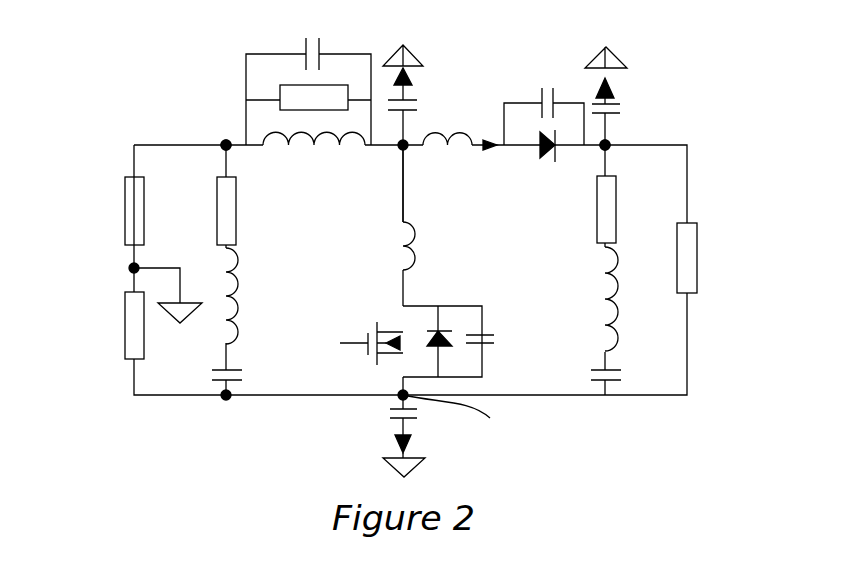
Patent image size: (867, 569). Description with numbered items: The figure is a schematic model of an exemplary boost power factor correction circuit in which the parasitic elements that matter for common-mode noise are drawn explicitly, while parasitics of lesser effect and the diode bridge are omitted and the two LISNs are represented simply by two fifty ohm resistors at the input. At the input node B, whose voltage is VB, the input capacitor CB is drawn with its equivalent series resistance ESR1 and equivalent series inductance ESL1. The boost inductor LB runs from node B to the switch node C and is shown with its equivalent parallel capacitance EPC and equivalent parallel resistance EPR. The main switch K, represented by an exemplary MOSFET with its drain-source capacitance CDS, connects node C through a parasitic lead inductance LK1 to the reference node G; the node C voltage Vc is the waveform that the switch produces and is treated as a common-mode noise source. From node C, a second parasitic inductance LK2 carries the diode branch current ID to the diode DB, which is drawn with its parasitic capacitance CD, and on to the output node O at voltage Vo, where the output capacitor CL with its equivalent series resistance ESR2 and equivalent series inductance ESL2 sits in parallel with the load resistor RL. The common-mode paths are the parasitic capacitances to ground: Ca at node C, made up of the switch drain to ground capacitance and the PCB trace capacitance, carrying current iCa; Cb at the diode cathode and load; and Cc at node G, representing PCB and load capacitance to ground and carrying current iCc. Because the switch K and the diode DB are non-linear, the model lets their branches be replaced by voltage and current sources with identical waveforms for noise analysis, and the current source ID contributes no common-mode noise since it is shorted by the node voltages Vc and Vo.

The equivalent parallel capacitance EPC is at (276, 91).
The equivalent parallel resistance EPR is at (276, 94).
The boost inductor LB is at (315, 167).
The node B voltage VB is at (213, 130).
The equivalent series resistance of input capacitor ESR1 is at (265, 211).
The equivalent series inductance of input capacitor ESL1 is at (268, 296).
The input capacitor CB is at (251, 365).
The parasitic capacitance between node C and ground Ca is at (396, 119).
The common-mode current through parasitic capacitance iCa is at (526, 74).
The node C voltage Vc is at (418, 186).
The parasitic lead inductance LK1 is at (435, 246).
The main switch K is at (411, 334).
The drain-source capacitance CDS is at (497, 358).
The parasitic capacitance between PCB and load and ground Cc is at (386, 417).
The common-mode current through Cc iCc is at (418, 452).
The node G is at (451, 418).
The parasitic lead inductance of diode branch LK2 is at (456, 128).
The diode branch current ID is at (487, 168).
The diode DB is at (548, 165).
The diode parasitic capacitance CD is at (544, 98).
The parasitic capacitance between diode cathode and load and ground Cb is at (626, 123).
The output voltage Vo is at (628, 165).
The equivalent series resistance of output capacitor ESR2 is at (566, 209).
The equivalent series inductance of output capacitor ESL2 is at (567, 299).
The output capacitor CL is at (584, 360).
The load resistor RL is at (704, 258).